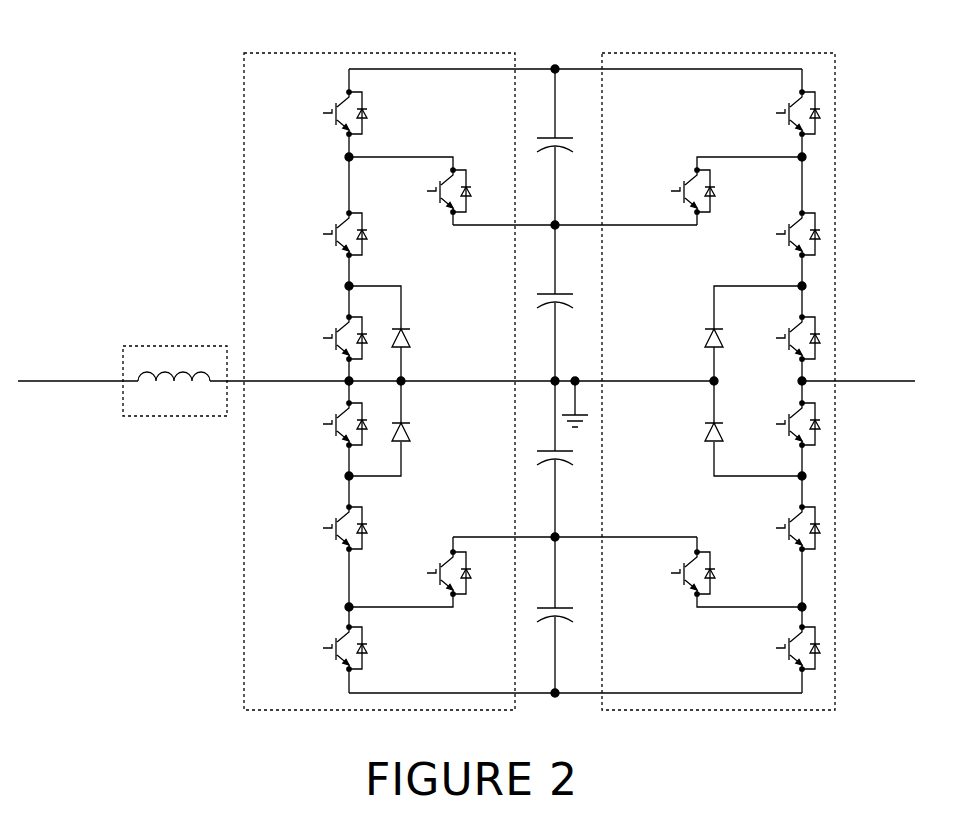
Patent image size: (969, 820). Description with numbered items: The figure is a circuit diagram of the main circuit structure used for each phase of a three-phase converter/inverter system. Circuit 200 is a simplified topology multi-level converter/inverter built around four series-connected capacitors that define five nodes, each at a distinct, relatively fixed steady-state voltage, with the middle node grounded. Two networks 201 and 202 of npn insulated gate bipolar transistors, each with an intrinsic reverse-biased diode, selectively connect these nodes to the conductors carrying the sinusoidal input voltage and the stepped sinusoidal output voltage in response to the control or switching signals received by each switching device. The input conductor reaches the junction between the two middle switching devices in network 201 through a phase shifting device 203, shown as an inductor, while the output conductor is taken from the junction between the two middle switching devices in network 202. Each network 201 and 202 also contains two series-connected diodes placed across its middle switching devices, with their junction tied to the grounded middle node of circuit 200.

The circuit 200 is at (342, 755).
The network 201 is at (395, 51).
The network 202 is at (745, 51).
The phase shifting device 203 is at (177, 346).